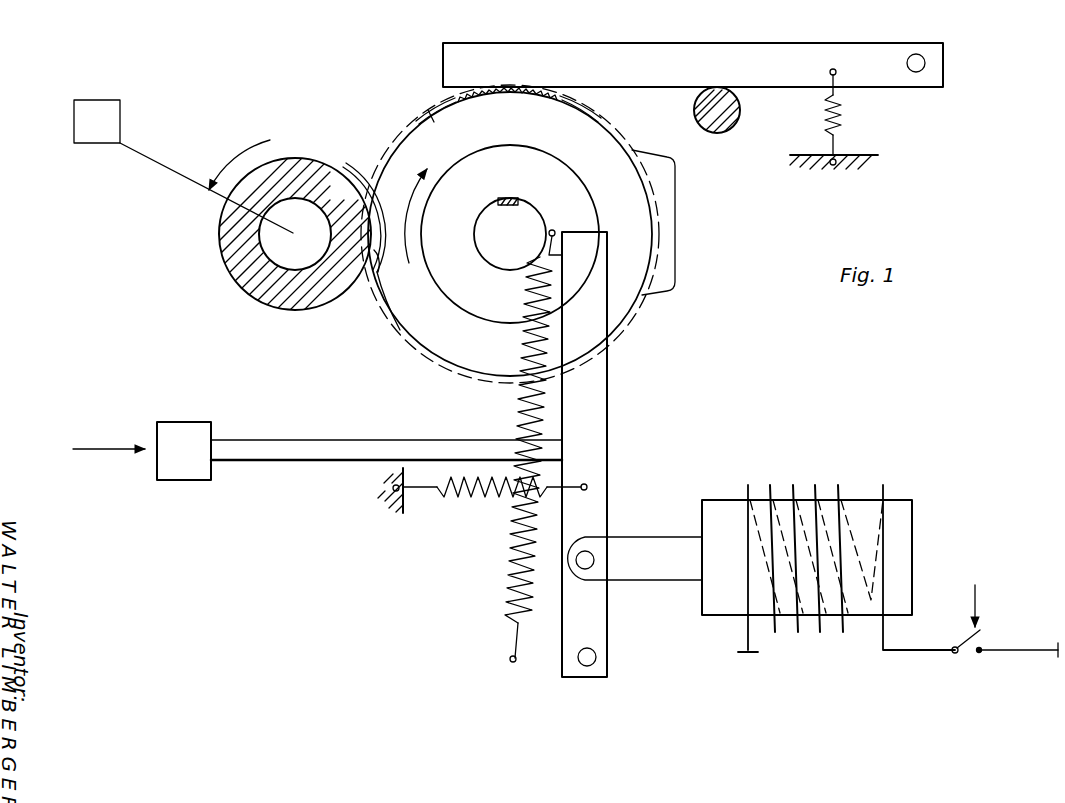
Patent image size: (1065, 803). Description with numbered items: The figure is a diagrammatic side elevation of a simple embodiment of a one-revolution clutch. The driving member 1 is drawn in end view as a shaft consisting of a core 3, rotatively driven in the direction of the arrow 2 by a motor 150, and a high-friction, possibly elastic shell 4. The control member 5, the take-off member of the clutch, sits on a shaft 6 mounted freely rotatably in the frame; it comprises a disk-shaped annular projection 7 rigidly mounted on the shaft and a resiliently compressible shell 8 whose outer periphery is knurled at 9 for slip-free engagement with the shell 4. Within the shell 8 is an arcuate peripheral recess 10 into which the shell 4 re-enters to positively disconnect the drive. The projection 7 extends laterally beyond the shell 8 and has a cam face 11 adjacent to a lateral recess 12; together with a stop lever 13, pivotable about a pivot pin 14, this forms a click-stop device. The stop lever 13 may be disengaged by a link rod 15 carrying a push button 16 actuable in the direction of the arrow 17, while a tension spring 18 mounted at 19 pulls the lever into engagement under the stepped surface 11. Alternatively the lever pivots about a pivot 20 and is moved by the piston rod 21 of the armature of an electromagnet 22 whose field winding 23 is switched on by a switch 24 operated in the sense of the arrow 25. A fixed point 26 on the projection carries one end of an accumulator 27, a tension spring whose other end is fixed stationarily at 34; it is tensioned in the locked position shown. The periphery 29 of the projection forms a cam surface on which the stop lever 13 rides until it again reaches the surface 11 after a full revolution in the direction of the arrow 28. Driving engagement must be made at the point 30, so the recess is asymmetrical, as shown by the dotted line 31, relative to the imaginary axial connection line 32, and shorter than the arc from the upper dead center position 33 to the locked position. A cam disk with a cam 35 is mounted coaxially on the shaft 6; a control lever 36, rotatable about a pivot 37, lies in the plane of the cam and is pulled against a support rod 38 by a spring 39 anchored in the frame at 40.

The driving member 1 is at (270, 252).
The arrow 2 is at (223, 174).
The core 3 is at (290, 262).
The shell 4 is at (225, 232).
The control member 5 is at (465, 290).
The shaft 6 is at (492, 223).
The annular projection 7 is at (482, 290).
The shell 8 is at (437, 123).
The knurled periphery 9 is at (590, 110).
The peripheral recess 10 is at (375, 276).
The cam face 11 is at (600, 231).
The lateral recess 12 is at (558, 248).
The stop lever 13 is at (600, 407).
The pivot pin 14 is at (597, 657).
The link rod 15 is at (303, 452).
The push button 16 is at (187, 468).
The arrow 17 is at (100, 447).
The tension spring 18 is at (492, 497).
The spring mounting 19 is at (397, 503).
The pivot 20 is at (591, 553).
The piston rod 21 is at (670, 568).
The electromagnet 22 is at (713, 508).
The solenoid coil 23 is at (845, 525).
The switch 24 is at (980, 643).
The arrow 25 is at (983, 607).
The fixed point 26 is at (553, 229).
The accumulator 27 is at (530, 380).
The arrow 28 is at (410, 198).
The periphery 29 is at (522, 160).
The engagement point 30 is at (362, 285).
The dotted line 31 is at (387, 195).
The axial connection line 32 is at (433, 250).
The upper dead center position 33 is at (463, 144).
The stationary fixing point 34 is at (509, 655).
The cam 35 is at (667, 279).
The control lever 36 is at (683, 52).
The pivot 37 is at (925, 62).
The support rod 38 is at (732, 118).
The spring 39 is at (838, 107).
The anchor point 40 is at (836, 165).
The motor 150 is at (121, 118).